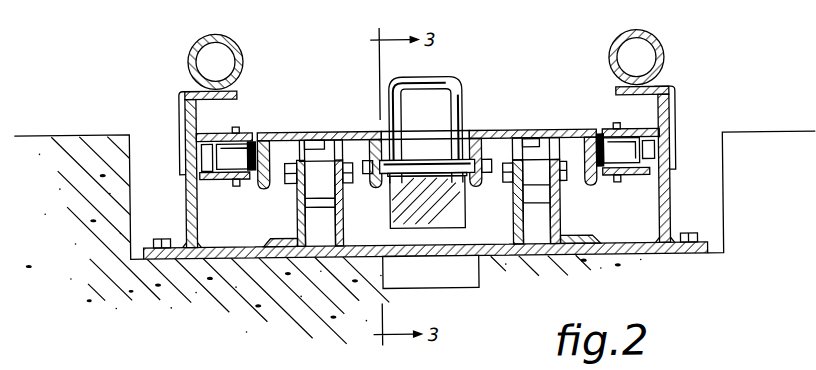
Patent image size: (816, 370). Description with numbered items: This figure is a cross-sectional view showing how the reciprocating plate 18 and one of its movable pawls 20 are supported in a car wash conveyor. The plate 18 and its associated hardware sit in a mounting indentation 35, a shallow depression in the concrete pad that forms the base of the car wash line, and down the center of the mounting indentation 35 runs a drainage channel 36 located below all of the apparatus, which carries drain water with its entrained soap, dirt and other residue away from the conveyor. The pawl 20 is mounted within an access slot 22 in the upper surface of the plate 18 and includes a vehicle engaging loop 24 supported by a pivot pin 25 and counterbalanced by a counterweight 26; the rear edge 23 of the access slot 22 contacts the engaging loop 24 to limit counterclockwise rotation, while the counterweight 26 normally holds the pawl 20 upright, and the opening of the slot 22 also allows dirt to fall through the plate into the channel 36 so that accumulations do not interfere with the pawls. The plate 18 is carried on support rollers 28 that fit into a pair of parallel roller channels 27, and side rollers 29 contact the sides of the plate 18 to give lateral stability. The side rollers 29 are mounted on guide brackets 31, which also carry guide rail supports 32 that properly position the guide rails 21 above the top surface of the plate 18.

The reciprocating plate 18 is at (343, 26).
The movable pawl 20 is at (437, 82).
The guide rail 21 is at (236, 43).
The access slot 22 is at (473, 129).
The rear edge of access slot 23 is at (415, 132).
The vehicle engaging loop 24 is at (468, 128).
The pivot pin 25 is at (401, 176).
The counterweight 26 is at (457, 205).
The roller channel 27 is at (284, 139).
The support roller 28 is at (323, 146).
The side roller 29 is at (250, 146).
The guide bracket 31 is at (187, 197).
The guide rail support 32 is at (182, 104).
The mounting indentation 35 is at (133, 132).
The drainage channel 36 is at (468, 278).